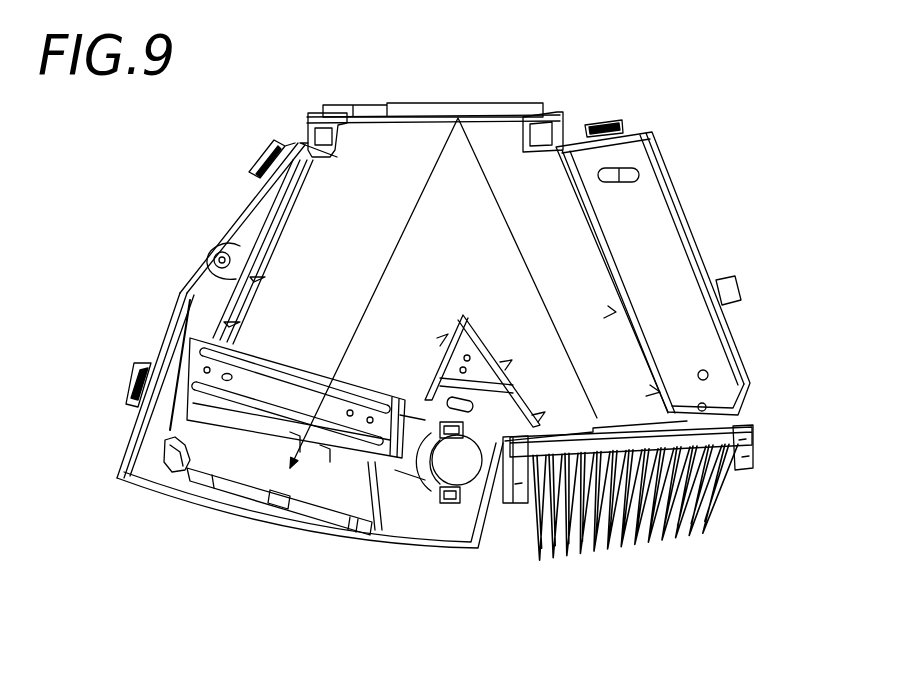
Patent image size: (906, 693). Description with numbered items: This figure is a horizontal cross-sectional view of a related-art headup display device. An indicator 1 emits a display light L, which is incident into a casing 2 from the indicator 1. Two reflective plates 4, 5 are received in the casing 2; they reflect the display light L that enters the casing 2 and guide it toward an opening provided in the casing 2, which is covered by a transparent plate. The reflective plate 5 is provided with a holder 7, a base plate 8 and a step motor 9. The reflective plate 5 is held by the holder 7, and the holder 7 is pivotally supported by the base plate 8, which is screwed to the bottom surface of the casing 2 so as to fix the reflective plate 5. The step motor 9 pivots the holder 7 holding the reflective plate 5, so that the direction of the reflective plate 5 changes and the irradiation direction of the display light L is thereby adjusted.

The indicator 1 is at (673, 433).
The casing 2 is at (233, 220).
The reflective plate 4 is at (483, 104).
The reflective plate 5 is at (243, 467).
The holder 7 is at (190, 477).
The base plate 8 is at (133, 372).
The step motor 9 is at (462, 477).
The display light L is at (527, 270).